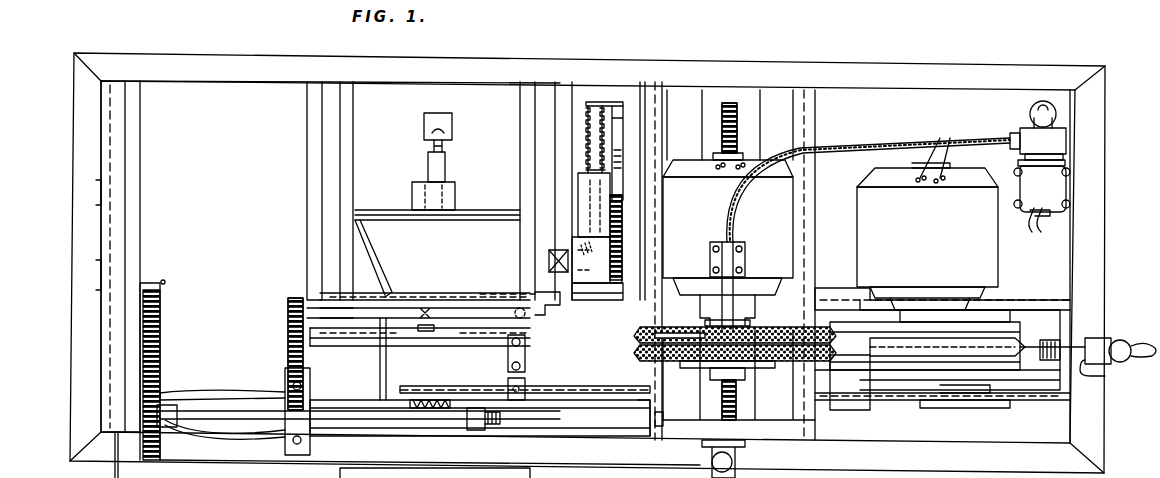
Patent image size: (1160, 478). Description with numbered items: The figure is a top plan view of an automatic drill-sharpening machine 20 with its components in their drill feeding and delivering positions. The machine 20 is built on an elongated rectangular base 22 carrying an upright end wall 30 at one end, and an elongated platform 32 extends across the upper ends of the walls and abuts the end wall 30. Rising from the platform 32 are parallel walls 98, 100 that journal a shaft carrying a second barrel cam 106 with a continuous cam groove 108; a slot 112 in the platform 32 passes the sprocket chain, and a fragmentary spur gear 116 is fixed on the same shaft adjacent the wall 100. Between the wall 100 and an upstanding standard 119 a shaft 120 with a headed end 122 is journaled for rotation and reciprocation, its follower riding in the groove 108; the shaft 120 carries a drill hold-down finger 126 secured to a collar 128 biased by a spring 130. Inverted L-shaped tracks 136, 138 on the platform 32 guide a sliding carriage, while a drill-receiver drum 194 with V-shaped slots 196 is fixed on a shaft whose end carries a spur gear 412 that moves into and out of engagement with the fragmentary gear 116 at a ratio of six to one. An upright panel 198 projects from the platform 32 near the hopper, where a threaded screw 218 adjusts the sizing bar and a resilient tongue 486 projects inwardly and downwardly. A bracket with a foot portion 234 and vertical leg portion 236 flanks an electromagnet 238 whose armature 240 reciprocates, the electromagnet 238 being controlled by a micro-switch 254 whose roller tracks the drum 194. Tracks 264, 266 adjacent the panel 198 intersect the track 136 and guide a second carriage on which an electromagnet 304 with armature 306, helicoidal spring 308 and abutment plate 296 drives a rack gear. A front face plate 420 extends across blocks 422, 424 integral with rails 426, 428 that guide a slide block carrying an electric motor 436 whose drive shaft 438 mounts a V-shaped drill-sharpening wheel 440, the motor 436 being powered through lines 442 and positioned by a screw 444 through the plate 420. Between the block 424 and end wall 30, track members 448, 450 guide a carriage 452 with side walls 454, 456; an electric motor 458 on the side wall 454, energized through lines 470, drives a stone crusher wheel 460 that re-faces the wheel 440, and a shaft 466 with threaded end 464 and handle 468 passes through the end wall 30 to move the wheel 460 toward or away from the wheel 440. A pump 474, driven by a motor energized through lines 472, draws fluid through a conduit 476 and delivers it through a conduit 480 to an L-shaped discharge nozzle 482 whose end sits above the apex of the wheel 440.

The automatic drill-sharpening machine 20 is at (244, 50).
The base 22 is at (325, 60).
The end wall 30 is at (1072, 428).
The platform 32 is at (168, 90).
The wall 98 is at (138, 202).
The wall 100 is at (307, 212).
The second barrel cam 106 is at (250, 400).
The cam groove 108 is at (210, 392).
The slot 112 is at (165, 282).
The fragmentary spur gear 116 is at (287, 455).
The standard 119 is at (642, 432).
The shaft 120 is at (556, 430).
The headed end 122 is at (664, 422).
The drill hold-down finger 126 is at (478, 356).
The collar 128 is at (478, 430).
The spring 130 is at (498, 426).
The track 136 is at (540, 306).
The track 138 is at (618, 372).
The drill-receiver drum 194 is at (440, 292).
The V-shaped slots 196 is at (470, 316).
The panel 198 is at (520, 162).
The threaded screw 218 is at (580, 477).
The foot portion 234 is at (450, 118).
The vertical leg portion 236 is at (452, 134).
The electromagnet 238 is at (407, 198).
The armature 240 is at (453, 166).
The micro-switch 254 is at (573, 159).
The track 264 is at (570, 80).
The track 266 is at (644, 80).
The abutment plate 296 is at (608, 102).
The electromagnet 304 is at (571, 210).
The armature 306 is at (590, 120).
The helicoidal spring 308 is at (590, 134).
The spur gear 412 is at (288, 322).
The front face plate 420 is at (786, 438).
The block 422 is at (688, 90).
The block 424 is at (772, 88).
The rail 426 is at (665, 82).
The rail 428 is at (805, 88).
The electric motor 436 is at (728, 242).
The drive shaft 438 is at (748, 300).
The drill-sharpening wheel 440 is at (778, 366).
The lines 442 is at (745, 165).
The screw 444 is at (734, 406).
The track member 448 is at (845, 276).
The track member 450 is at (876, 392).
The carriage 452 is at (1037, 328).
The side wall 454 is at (1010, 318).
The side wall 456 is at (1000, 384).
The electric motor 458 is at (927, 236).
The stone crusher wheel 460 is at (866, 380).
The threaded end 464 is at (1062, 338).
The shaft 466 is at (1105, 377).
The handle 468 is at (1140, 338).
The lines 470 is at (1060, 182).
The lines 472 is at (1035, 218).
The pump 474 is at (1062, 138).
The conduit 476 is at (1060, 112).
The conduit 480 is at (905, 136).
The L-shaped discharge nozzle 482 is at (722, 288).
The resilient tongue 486 is at (384, 264).